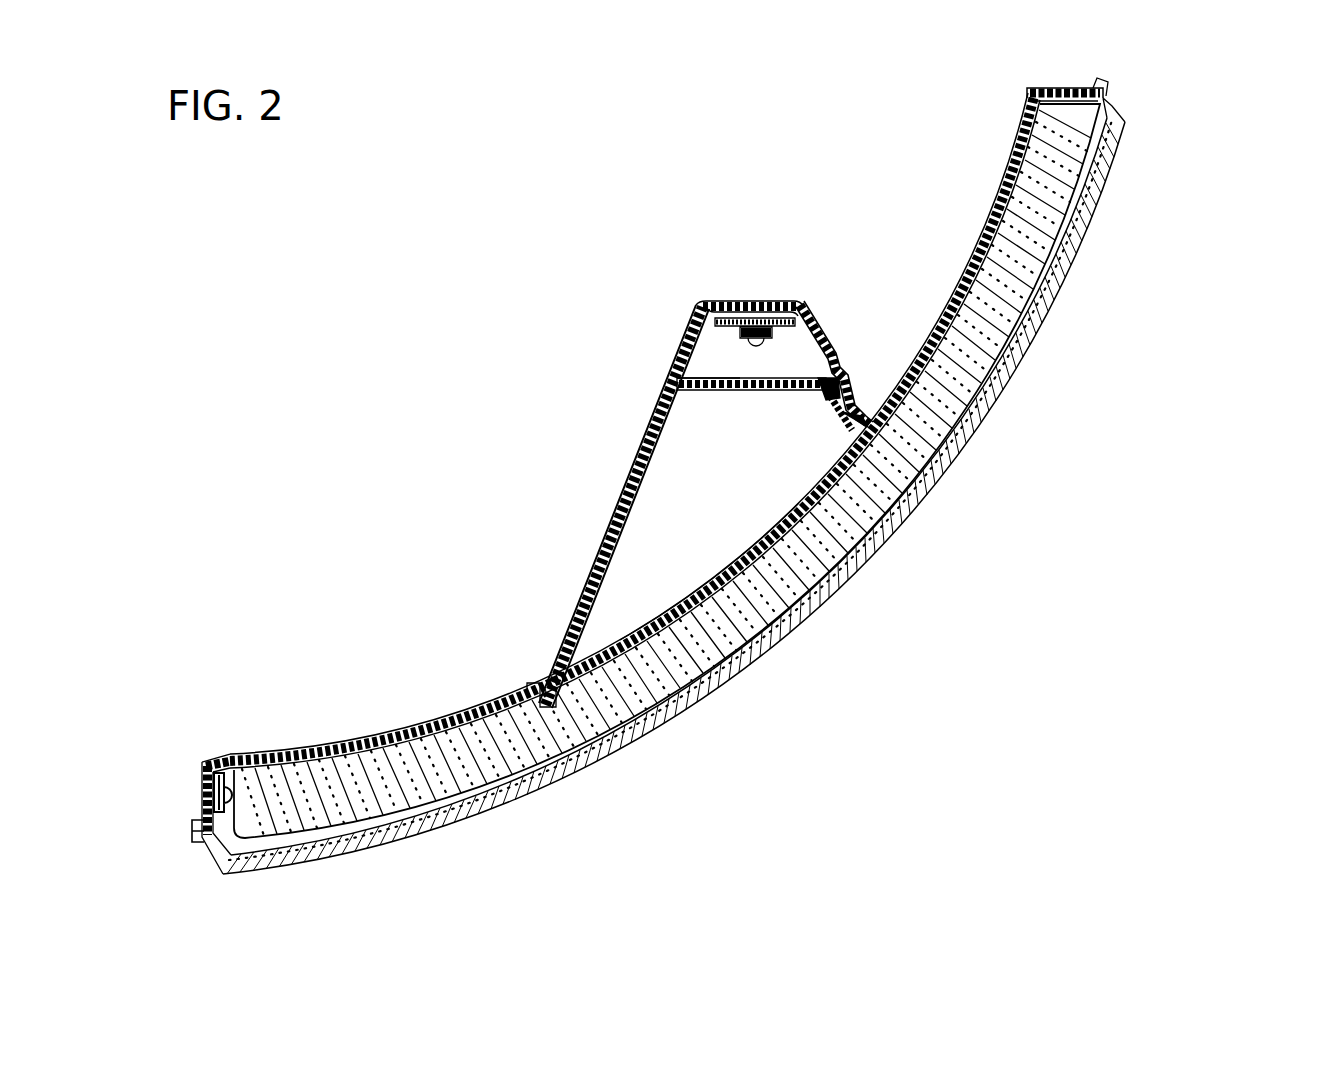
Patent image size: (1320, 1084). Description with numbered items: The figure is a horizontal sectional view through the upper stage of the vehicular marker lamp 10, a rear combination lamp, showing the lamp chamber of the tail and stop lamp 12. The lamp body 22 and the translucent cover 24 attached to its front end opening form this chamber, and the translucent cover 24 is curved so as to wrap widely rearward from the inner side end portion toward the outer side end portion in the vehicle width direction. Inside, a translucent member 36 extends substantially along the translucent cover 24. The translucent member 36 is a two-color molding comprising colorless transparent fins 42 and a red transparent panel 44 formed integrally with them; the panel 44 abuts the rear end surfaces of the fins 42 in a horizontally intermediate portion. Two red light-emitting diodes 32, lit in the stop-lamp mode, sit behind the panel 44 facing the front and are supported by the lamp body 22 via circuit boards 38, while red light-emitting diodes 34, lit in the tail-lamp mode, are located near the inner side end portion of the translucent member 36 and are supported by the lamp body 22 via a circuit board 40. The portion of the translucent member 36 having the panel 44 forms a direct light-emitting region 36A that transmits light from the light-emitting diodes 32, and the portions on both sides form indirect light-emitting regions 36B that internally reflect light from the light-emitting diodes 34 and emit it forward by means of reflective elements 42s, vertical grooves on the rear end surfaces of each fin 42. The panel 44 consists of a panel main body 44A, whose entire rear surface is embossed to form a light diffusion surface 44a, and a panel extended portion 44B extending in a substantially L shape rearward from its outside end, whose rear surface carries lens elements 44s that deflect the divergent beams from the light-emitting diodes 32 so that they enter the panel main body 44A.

The vehicular marker lamp 10 is at (1150, 592).
The tail and stop lamp 12 is at (938, 579).
The lamp body 22 is at (608, 511).
The translucent cover 24 is at (980, 468).
The light-emitting diodes 32 is at (780, 342).
The light-emitting diodes 34 is at (257, 773).
The translucent member 36 is at (847, 693).
The direct light-emitting region 36A is at (815, 603).
The indirect light-emitting regions 36B is at (1044, 292).
The circuit boards 38 is at (775, 305).
The circuit board 40 is at (199, 790).
The fins 42 is at (679, 702).
The reflective elements 42s is at (967, 258).
The panel 44 is at (718, 608).
The panel main body 44A is at (673, 606).
The panel extended portion 44B is at (747, 392).
The light diffusion surface 44a is at (748, 553).
The lens elements 44s is at (730, 373).